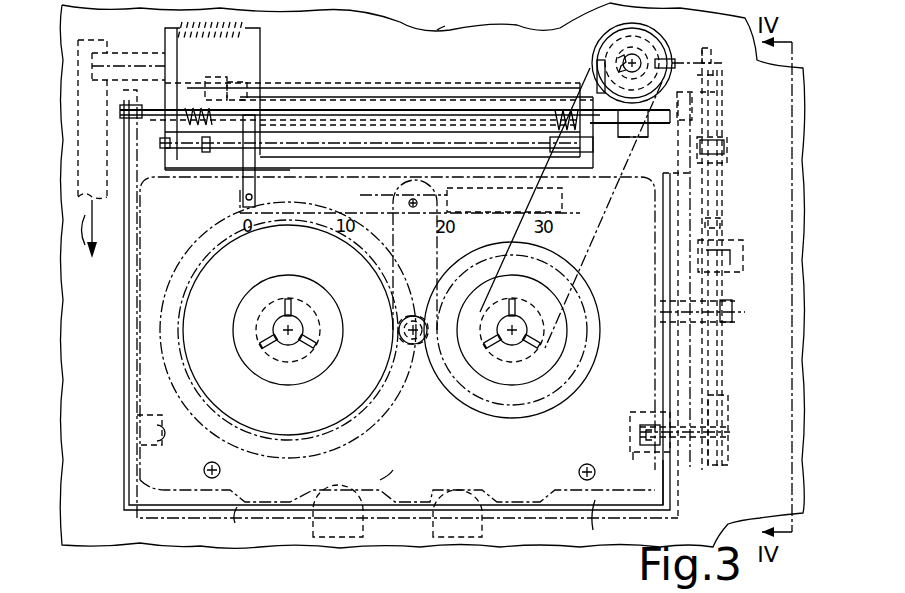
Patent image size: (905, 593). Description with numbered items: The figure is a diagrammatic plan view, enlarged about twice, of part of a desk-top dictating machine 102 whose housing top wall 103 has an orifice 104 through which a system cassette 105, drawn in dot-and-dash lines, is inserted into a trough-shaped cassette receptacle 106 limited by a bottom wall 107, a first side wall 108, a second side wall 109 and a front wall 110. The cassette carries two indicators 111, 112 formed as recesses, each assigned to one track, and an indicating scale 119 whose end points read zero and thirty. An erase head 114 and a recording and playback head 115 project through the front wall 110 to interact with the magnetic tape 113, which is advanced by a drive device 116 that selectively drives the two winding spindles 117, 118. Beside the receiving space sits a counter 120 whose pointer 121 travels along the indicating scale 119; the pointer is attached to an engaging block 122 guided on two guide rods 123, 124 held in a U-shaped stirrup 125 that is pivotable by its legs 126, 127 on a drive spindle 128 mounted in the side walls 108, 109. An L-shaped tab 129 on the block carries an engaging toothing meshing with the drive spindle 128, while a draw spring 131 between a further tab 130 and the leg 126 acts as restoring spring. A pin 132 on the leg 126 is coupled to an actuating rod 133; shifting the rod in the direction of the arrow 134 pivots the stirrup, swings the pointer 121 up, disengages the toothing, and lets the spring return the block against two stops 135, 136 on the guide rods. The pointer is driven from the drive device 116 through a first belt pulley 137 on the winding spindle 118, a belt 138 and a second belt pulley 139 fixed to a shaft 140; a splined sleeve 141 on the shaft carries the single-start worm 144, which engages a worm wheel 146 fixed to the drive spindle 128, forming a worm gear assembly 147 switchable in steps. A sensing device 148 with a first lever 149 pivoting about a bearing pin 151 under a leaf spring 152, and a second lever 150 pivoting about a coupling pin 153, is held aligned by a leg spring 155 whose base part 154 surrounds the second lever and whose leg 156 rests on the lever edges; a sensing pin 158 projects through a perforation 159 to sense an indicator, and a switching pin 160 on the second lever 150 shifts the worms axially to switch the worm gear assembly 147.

The desk-top dictating machine 102 is at (132, 551).
The housing top wall 103 is at (437, 30).
The orifice 104 is at (129, 315).
The system cassette 105 is at (201, 494).
The cassette receptacle 106 is at (156, 500).
The bottom wall 107 is at (593, 530).
The first side wall 108 is at (132, 276).
The second side wall 109 is at (670, 463).
The front wall 110 is at (235, 527).
The indicator 111 is at (647, 418).
The indicator 112 is at (157, 445).
The magnetic tape 113 is at (380, 480).
The erase head 114 is at (313, 537).
The recording and playback head 115 is at (482, 537).
The drive device 116 is at (430, 397).
The winding spindle 117 is at (273, 322).
The winding spindle 118 is at (506, 366).
The indicating scale 119 is at (562, 203).
The counter 120 is at (201, 177).
The pointer 121 is at (243, 170).
The engaging block 122 is at (277, 97).
The guide rod 123 is at (332, 83).
The guide rod 124 is at (383, 97).
The U-shaped stirrup 125 is at (426, 132).
The leg 126 is at (183, 80).
The leg 127 is at (590, 68).
The drive spindle 128 is at (597, 80).
The L-shaped tab 129 is at (250, 82).
The tab 130 is at (258, 40).
The draw spring 131 is at (200, 25).
The pin 132 is at (118, 53).
The actuating rod 133 is at (80, 42).
The arrow 134 is at (88, 241).
The stop 135 is at (205, 152).
The stop 136 is at (210, 80).
The first belt pulley 137 is at (507, 290).
The belt 138 is at (597, 233).
The second belt pulley 139 is at (608, 32).
The shaft 140 is at (620, 60).
The sleeve 141 is at (622, 55).
The worm 144 is at (652, 58).
The worm wheel 146 is at (640, 127).
The worm gear assembly 147 is at (607, 118).
The sensing device 148 is at (732, 330).
The first lever 149 is at (725, 241).
The second lever 150 is at (715, 78).
The bearing pin 151 is at (733, 312).
The leaf spring 152 is at (726, 452).
The coupling pin 153 is at (722, 160).
The base part 154 is at (715, 92).
The leg spring 155 is at (728, 123).
The leg 156 is at (722, 225).
The sensing pin 158 is at (692, 437).
The perforation 159 is at (633, 455).
The switching pin 160 is at (690, 63).